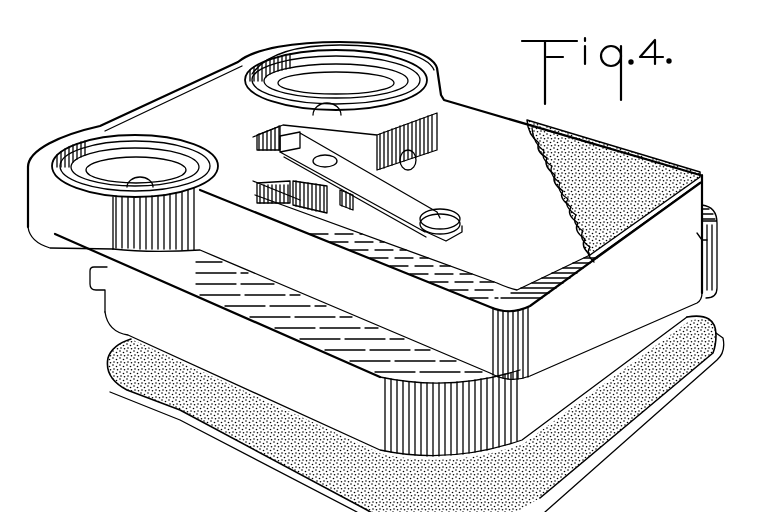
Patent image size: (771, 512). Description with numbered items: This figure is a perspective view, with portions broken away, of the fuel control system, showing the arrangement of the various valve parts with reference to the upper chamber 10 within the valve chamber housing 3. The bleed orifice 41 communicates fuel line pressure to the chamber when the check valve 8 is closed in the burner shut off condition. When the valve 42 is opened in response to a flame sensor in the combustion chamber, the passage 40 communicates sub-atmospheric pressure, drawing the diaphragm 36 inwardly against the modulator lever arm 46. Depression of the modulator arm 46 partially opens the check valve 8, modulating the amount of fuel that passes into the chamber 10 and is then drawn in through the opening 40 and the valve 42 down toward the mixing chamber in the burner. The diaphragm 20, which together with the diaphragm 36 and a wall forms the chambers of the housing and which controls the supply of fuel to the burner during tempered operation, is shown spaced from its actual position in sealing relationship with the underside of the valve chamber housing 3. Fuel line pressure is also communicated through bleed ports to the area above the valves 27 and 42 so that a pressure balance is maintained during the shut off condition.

The valve chamber housing 3 is at (718, 273).
The check valve 8 is at (278, 169).
The upper chamber 10 is at (527, 253).
The diaphragm 20 is at (647, 410).
The valve 27 is at (93, 170).
The diaphragm 36 is at (640, 172).
The passage 40 is at (412, 165).
The bleed orifice 41 is at (320, 220).
The valve 42 is at (313, 92).
The modulator lever arm 46 is at (425, 203).